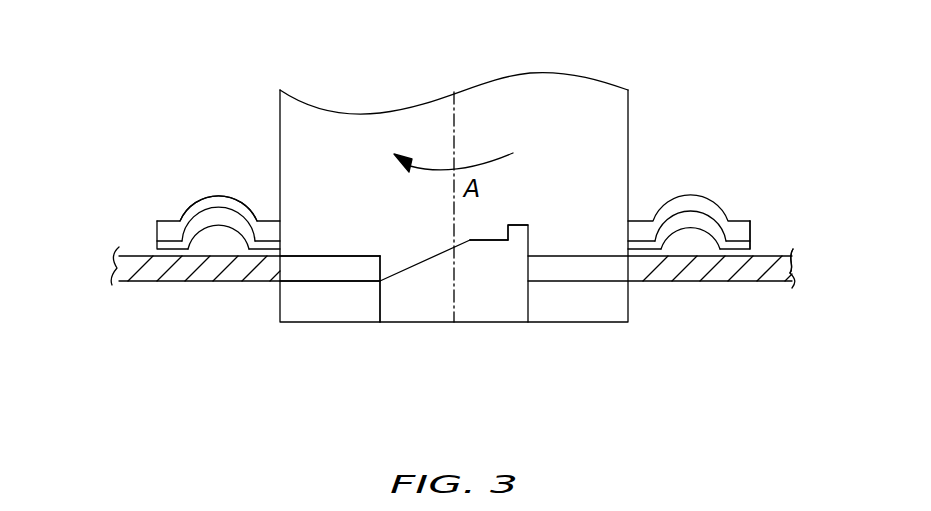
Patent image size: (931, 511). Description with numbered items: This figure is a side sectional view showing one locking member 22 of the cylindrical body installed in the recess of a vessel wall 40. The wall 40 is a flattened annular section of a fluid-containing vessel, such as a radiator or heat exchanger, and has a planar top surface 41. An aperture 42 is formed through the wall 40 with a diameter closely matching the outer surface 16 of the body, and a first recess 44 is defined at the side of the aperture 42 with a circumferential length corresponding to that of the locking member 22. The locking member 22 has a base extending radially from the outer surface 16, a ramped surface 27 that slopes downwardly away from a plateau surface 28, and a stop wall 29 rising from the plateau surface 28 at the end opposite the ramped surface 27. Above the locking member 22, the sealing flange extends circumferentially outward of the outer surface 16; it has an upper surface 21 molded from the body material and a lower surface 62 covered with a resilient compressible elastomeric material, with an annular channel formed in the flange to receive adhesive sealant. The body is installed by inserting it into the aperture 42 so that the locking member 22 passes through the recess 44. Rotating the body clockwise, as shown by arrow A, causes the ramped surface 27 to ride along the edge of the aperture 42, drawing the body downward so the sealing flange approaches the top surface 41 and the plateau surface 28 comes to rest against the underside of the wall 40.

The outer surface 16 is at (332, 307).
The upper surface 21 is at (218, 197).
The locking member 22 is at (418, 305).
The ramped surface 27 is at (448, 256).
The plateau surface 28 is at (478, 240).
The stop wall 29 is at (522, 224).
The wall 40 is at (113, 258).
The top surface 41 is at (785, 252).
The aperture 42 is at (303, 268).
The first recess 44 is at (392, 267).
The lower surface 62 is at (745, 247).